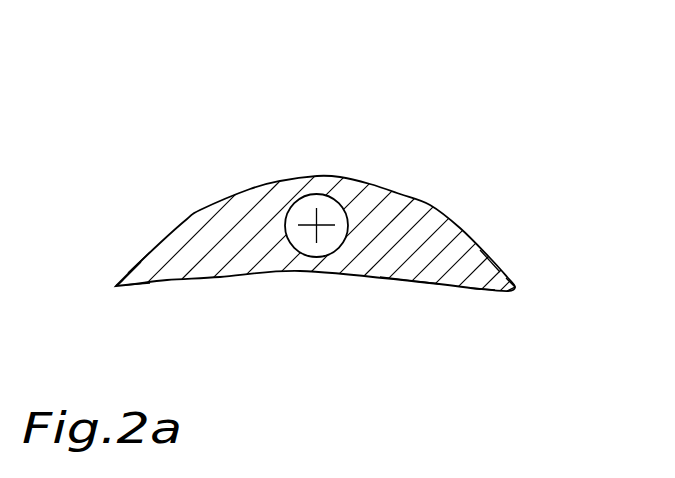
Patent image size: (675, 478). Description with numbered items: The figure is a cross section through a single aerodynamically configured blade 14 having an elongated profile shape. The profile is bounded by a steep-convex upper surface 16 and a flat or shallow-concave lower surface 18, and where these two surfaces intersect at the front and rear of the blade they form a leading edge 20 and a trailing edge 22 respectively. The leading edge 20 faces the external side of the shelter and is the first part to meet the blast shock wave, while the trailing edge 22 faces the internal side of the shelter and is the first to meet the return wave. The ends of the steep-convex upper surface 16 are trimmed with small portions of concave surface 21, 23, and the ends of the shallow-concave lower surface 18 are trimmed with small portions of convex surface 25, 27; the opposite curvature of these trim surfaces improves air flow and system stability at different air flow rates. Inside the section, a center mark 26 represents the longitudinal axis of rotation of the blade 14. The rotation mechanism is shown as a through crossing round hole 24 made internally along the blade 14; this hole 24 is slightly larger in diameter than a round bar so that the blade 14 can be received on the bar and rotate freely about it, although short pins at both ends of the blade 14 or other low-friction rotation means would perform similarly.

The aerodynamically configured blade 14 is at (520, 70).
The steep-convex upper surface 16 is at (187, 220).
The shallow-concave lower surface 18 is at (420, 283).
The leading edge 20 is at (517, 287).
The concave surface 21 is at (500, 272).
The trailing edge 22 is at (116, 287).
The concave surface 23 is at (137, 266).
The through crossing round hole 24 is at (333, 202).
The convex surface 25 is at (490, 290).
The center mark 26 is at (315, 223).
The convex surface 27 is at (131, 287).